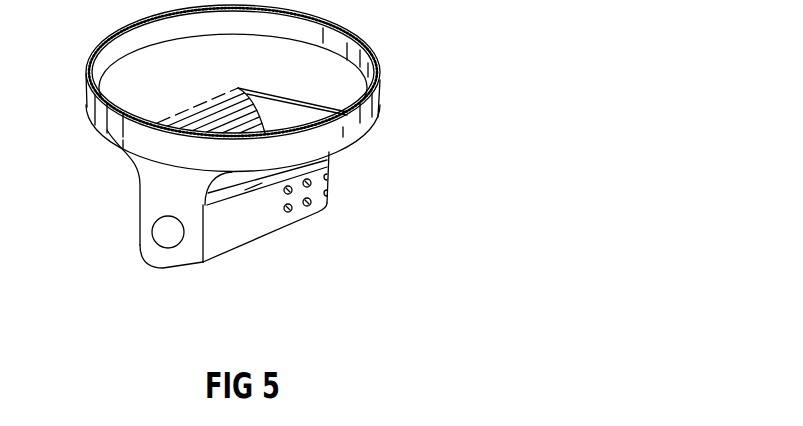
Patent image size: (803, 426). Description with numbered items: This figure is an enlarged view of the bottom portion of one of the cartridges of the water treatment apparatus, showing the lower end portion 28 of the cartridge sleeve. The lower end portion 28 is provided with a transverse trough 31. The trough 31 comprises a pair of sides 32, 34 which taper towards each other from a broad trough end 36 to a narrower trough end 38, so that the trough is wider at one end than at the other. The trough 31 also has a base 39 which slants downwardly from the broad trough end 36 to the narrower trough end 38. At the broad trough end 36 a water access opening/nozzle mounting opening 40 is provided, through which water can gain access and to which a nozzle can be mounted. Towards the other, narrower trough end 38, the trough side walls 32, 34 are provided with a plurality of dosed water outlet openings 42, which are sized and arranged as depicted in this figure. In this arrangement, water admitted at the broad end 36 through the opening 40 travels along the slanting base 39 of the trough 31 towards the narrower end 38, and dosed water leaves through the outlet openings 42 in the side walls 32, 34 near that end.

The lower end portion 28 is at (378, 115).
The transverse trough 31 is at (248, 233).
The trough side 32 is at (140, 203).
The trough side 34 is at (247, 215).
The broad trough end 36 is at (167, 248).
The narrower trough end 38 is at (330, 165).
The base 39 is at (210, 258).
The water access opening/nozzle mounting opening 40 is at (148, 242).
The dosed water outlet openings 42 is at (288, 212).